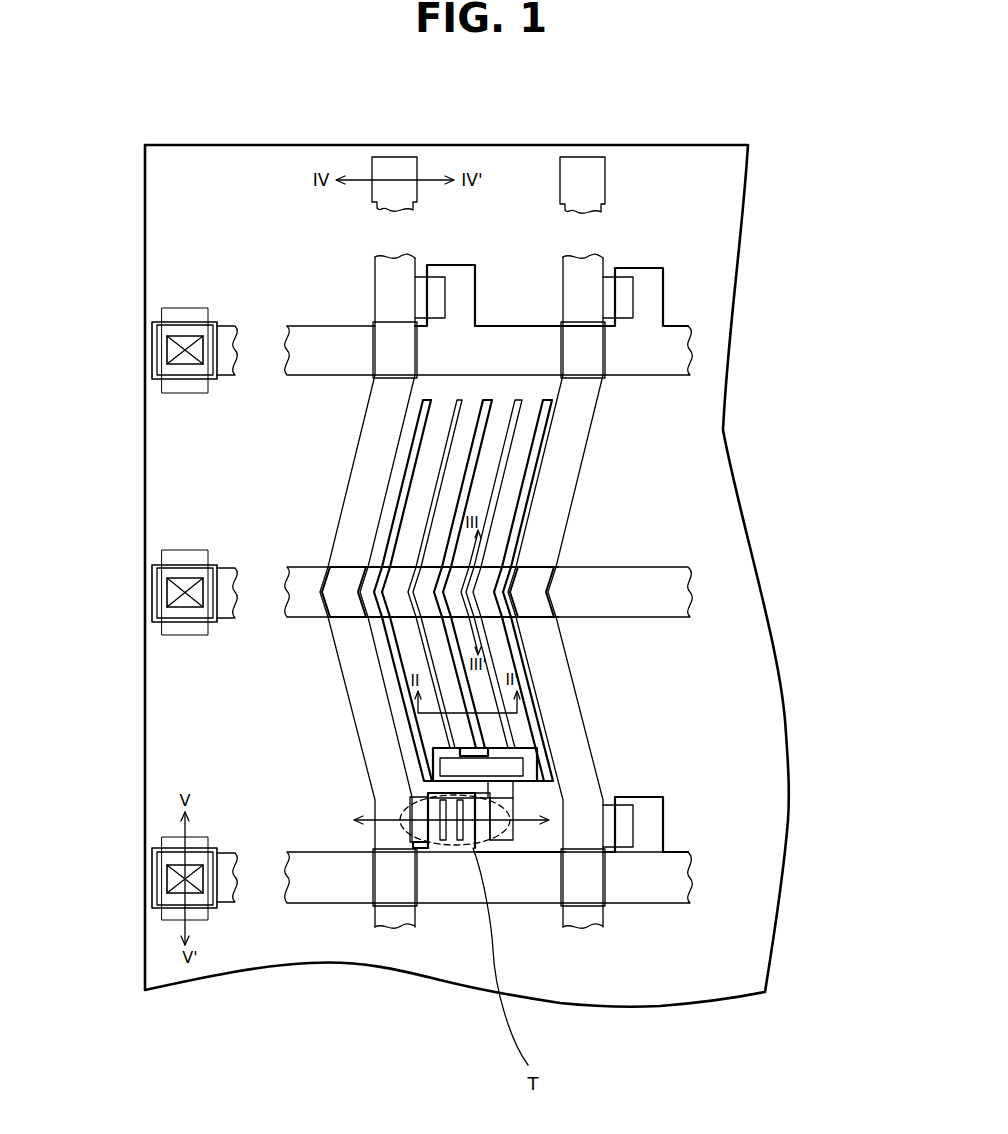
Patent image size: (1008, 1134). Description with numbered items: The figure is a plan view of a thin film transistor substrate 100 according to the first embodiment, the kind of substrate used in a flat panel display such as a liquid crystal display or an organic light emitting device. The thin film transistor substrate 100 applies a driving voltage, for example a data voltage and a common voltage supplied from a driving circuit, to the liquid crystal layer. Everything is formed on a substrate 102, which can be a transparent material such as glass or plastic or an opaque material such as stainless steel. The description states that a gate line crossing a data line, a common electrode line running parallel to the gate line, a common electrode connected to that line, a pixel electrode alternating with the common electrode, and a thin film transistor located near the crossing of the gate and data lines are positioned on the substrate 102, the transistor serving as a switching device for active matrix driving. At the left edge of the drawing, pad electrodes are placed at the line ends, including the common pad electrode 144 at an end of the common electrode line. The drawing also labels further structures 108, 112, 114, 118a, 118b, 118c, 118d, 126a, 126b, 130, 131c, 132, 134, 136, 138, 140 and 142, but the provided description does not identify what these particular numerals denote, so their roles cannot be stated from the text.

The thin film transistor substrate 100 is at (735, 103).
The substrate 102 is at (735, 222).
The active layer 108 is at (503, 843).
The thin film transistor 112 is at (423, 812).
The gate electrode 114 is at (565, 795).
The source electrode 118a is at (438, 848).
The drain electrode 118b is at (400, 910).
The drain extension 118c is at (513, 808).
The data line branch 118d is at (557, 592).
The contact hole 126a is at (458, 848).
The contact hole 126b is at (162, 842).
The data line 130 is at (678, 882).
The pixel electrode branch 131c is at (498, 470).
The pixel electrode 132 is at (350, 665).
The common electrode 134 is at (523, 508).
The gate line 136 is at (678, 600).
The common line pad 138 is at (215, 885).
The contact pad 140 is at (168, 880).
The pad 142 is at (586, 188).
The common pad electrode 144 is at (152, 593).